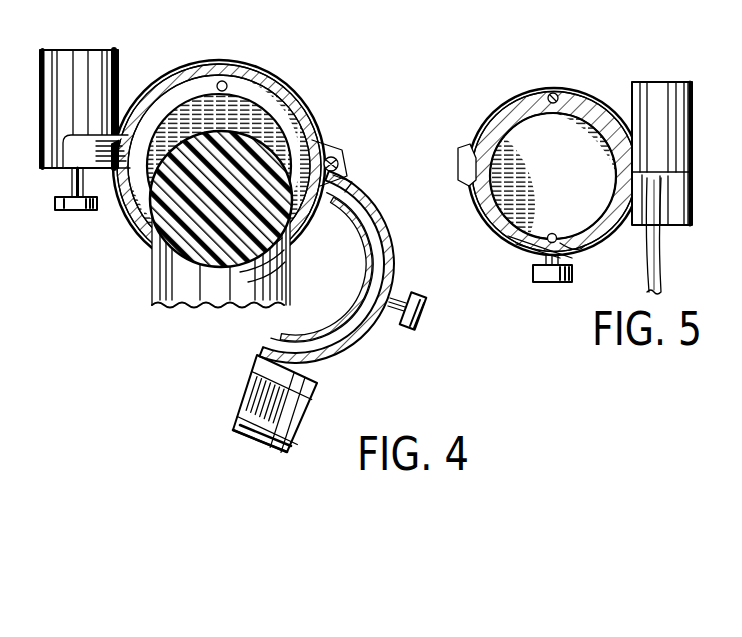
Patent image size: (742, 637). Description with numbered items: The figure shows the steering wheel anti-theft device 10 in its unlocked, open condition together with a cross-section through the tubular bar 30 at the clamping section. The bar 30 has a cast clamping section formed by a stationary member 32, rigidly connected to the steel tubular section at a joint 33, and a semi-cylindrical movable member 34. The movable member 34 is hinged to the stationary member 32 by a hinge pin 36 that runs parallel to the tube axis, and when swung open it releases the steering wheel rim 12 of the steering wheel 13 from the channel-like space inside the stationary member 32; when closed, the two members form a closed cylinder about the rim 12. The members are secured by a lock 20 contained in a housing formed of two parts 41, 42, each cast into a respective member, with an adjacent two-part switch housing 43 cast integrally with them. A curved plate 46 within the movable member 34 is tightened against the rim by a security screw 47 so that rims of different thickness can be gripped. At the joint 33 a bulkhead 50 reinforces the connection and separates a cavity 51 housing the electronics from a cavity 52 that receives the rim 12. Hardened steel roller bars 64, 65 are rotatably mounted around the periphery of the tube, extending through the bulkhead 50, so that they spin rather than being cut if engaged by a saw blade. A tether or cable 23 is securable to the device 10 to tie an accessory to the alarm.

In FIG. 4, the anti-theft device 10 is at (326, 42).
In FIG. 5, the anti-theft device 10 is at (666, 46).
In FIG. 4, the steering wheel rim 12 is at (153, 262).
In FIG. 4, the steering wheel 13 is at (152, 293).
In FIG. 4, the lock 20 is at (109, 52).
In FIG. 5, the lock 20 is at (694, 83).
In FIG. 5, the tether or cable 23 is at (662, 258).
In FIG. 4, the tubular bar 30 is at (299, 93).
In FIG. 5, the tubular bar 30 is at (579, 84).
In FIG. 4, the stationary member 32 is at (304, 106).
In FIG. 5, the stationary member 32 is at (512, 92).
In FIG. 5, the joint 33 is at (490, 110).
In FIG. 4, the movable member 34 is at (367, 344).
In FIG. 4, the hinge pin 36 is at (344, 161).
In FIG. 4, the lock housing part 41 is at (46, 52).
In FIG. 5, the lock housing part 41 is at (695, 103).
In FIG. 4, the lock housing part 42 is at (237, 440).
In FIG. 5, the lock housing part 42 is at (695, 194).
In FIG. 4, the switch housing 43 is at (72, 160).
In FIG. 4, the curved plate 46 is at (363, 250).
In FIG. 4, the security screw 47 is at (427, 306).
In FIG. 5, the security screw 47 is at (546, 285).
In FIG. 4, the bulkhead 50 is at (298, 141).
In FIG. 5, the bulkhead 50 is at (493, 222).
In FIG. 5, the cavity 51 is at (530, 218).
In FIG. 4, the cavity 52 is at (189, 120).
In FIG. 4, the roller bar 64 is at (230, 82).
In FIG. 5, the roller bar 64 is at (550, 94).
In FIG. 5, the roller bar 65 is at (574, 248).